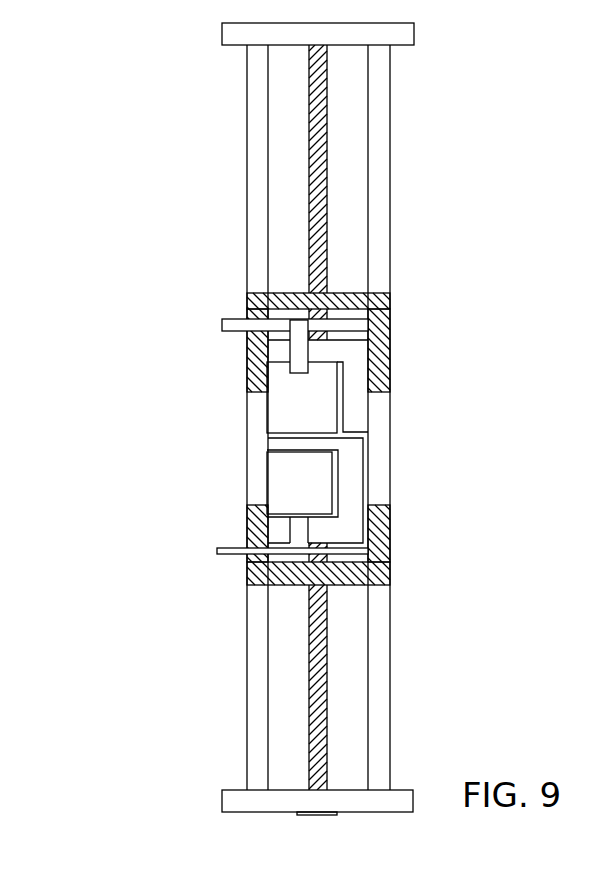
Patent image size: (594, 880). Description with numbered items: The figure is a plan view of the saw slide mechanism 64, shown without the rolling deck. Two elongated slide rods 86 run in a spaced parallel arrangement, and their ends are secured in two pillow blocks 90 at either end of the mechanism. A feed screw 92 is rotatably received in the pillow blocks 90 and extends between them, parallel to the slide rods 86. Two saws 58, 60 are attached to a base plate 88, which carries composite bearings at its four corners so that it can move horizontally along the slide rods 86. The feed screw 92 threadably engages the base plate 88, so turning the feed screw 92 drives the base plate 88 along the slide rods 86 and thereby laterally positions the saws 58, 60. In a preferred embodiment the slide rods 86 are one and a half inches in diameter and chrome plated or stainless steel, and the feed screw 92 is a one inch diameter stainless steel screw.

The saw slide mechanism 64 is at (126, 126).
The slide rods 86 is at (253, 210).
The pillow blocks 90 is at (228, 34).
The feed screw 92 is at (326, 142).
The saw 58 is at (224, 325).
The saw 60 is at (218, 551).
The base plate 88 is at (280, 350).